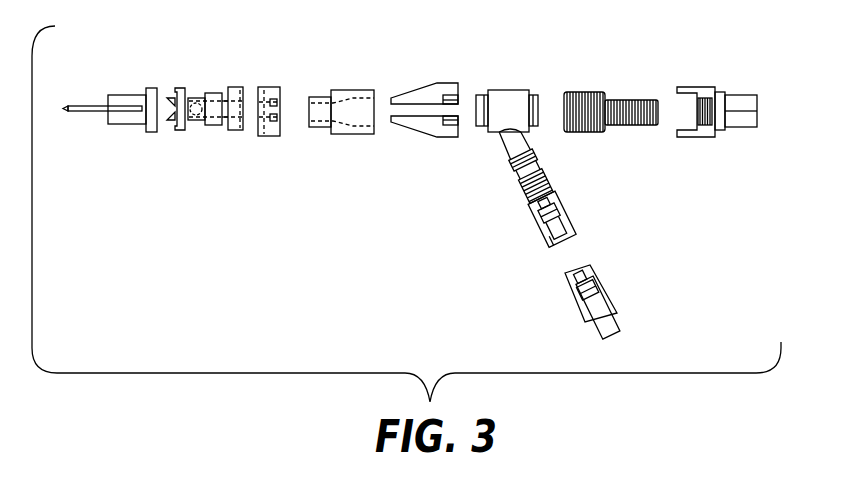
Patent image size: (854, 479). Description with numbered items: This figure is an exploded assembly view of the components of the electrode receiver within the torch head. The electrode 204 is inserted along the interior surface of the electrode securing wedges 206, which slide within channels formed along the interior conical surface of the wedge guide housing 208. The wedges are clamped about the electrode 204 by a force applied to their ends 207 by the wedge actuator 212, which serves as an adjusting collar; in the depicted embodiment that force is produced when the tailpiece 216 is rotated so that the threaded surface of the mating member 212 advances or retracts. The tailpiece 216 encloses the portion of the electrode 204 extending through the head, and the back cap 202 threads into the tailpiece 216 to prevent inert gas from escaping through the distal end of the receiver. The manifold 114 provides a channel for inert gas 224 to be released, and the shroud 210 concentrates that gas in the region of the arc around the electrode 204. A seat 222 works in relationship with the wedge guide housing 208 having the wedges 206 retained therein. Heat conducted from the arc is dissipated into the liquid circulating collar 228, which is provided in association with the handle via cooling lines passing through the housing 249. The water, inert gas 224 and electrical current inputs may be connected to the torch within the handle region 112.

The handle region 112 is at (586, 328).
The manifold 114 is at (180, 88).
The back cap 202 is at (742, 128).
The electrode 204 is at (69, 100).
The electrode securing wedges 206 is at (422, 90).
The ends of the wedges 207 is at (458, 99).
The wedge guide housing 208 is at (348, 134).
The shroud 210 is at (128, 124).
The wedge actuator 212 is at (588, 92).
The tailpiece 216 is at (695, 137).
The seat 222 is at (236, 131).
The inert gas 224 is at (600, 298).
The circulating collar 228 is at (270, 87).
The housing 249 is at (485, 95).